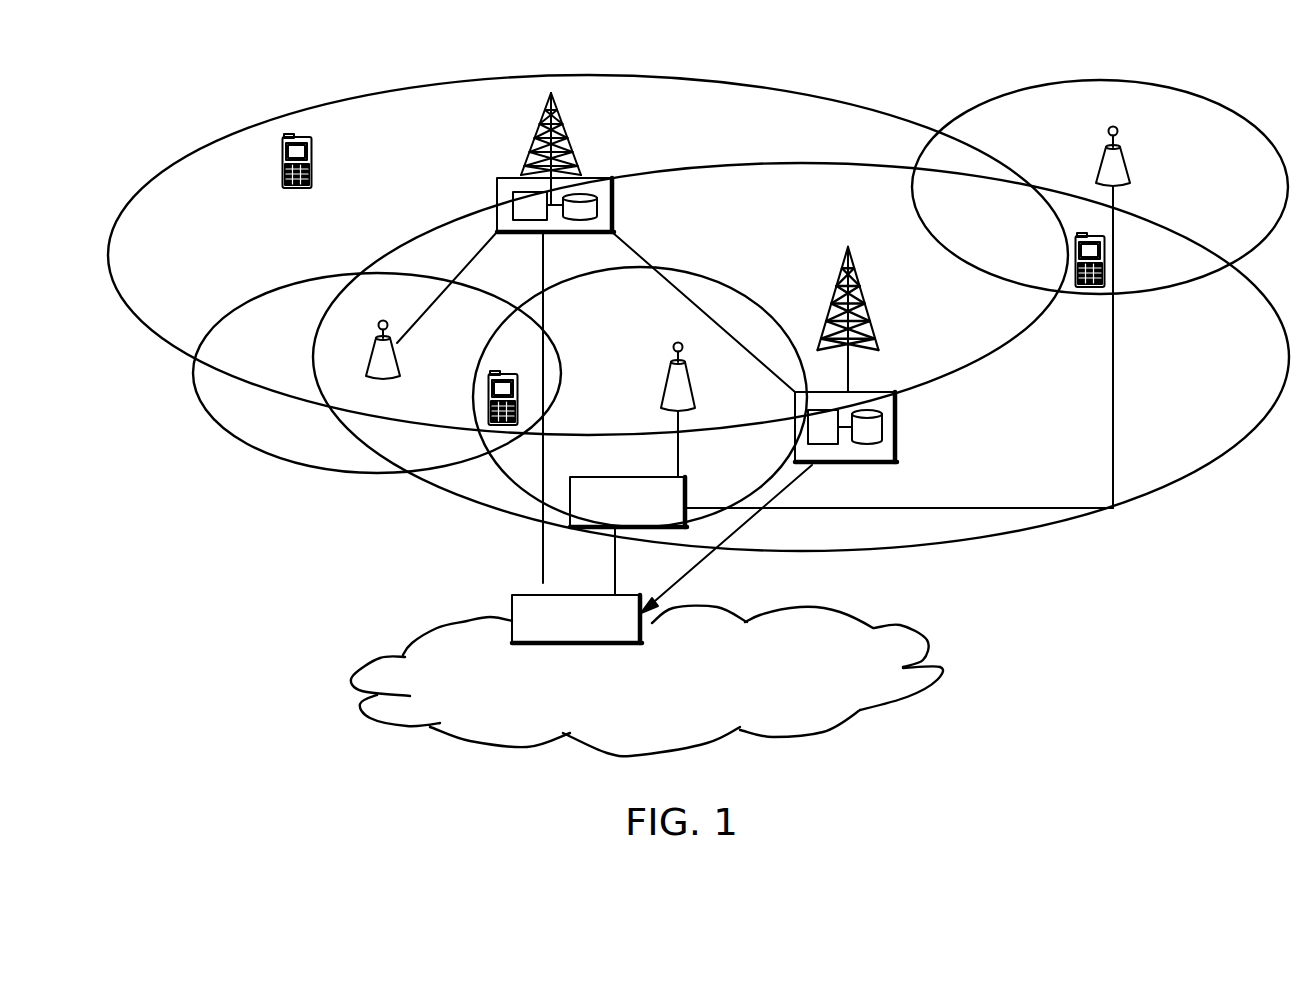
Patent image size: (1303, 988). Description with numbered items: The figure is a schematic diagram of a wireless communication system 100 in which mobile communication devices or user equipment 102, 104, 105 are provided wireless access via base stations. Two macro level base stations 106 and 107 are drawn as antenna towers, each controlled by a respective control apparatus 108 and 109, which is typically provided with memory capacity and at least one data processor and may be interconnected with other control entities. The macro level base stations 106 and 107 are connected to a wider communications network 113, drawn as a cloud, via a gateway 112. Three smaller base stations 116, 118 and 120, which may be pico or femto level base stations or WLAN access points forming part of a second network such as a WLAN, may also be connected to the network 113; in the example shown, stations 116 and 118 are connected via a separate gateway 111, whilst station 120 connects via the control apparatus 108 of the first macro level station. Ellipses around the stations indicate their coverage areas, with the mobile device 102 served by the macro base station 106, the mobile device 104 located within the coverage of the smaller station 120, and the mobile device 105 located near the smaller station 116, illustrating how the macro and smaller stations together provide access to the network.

The wireless communication system 100 is at (207, 123).
The mobile communication device 102 is at (277, 178).
The mobile communication device 104 is at (487, 401).
The mobile communication device 105 is at (1093, 292).
The macro level base station 106 is at (535, 142).
The macro level base station 107 is at (870, 320).
The control apparatus 108 is at (497, 197).
The control apparatus 109 is at (887, 452).
The gateway 111 is at (577, 510).
The gateway 112 is at (513, 594).
The wider communications network 113 is at (435, 657).
The smaller base station 116 is at (1098, 160).
The smaller base station 118 is at (680, 392).
The smaller base station 120 is at (370, 353).